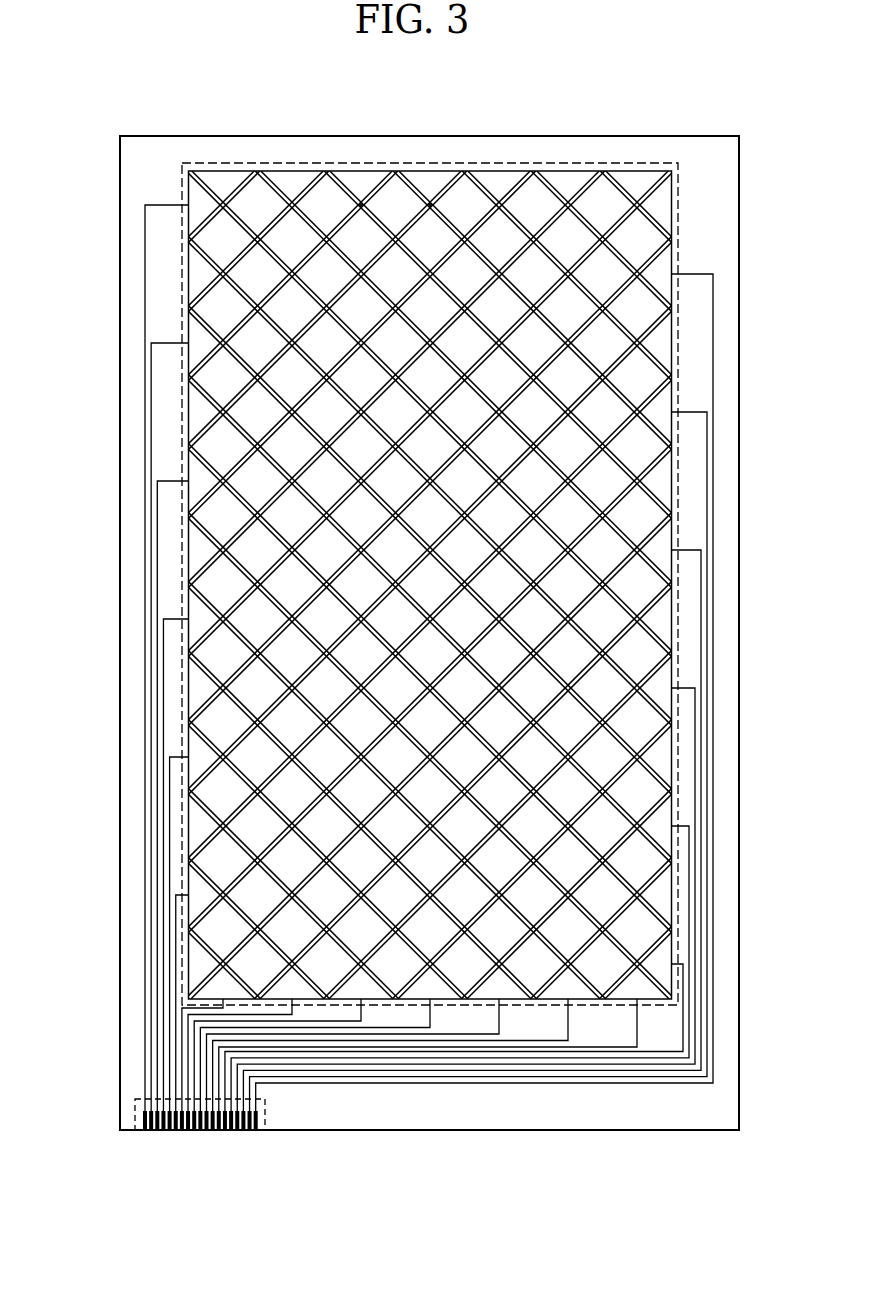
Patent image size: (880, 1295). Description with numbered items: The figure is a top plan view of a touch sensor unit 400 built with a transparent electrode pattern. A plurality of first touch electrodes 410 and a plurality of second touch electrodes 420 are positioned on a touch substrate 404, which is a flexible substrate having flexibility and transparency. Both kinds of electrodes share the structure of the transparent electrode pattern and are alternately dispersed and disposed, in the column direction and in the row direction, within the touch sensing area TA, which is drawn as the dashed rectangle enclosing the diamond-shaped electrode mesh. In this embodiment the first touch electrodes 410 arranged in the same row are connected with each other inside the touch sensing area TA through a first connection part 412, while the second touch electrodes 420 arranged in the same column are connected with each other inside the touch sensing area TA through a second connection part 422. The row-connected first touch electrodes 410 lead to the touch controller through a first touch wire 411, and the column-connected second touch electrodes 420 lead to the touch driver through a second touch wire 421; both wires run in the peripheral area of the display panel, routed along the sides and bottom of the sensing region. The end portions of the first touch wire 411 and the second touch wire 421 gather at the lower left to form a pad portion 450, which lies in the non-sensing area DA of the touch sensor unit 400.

The touch sensor unit 400 is at (544, 96).
The touch substrate 404 is at (588, 137).
The non-sensing area DA is at (138, 174).
The touch sensing area TA is at (648, 164).
The first touch electrodes 410 is at (473, 203).
The first connection part 412 is at (435, 203).
The second touch electrodes 420 is at (383, 218).
The second connection part 422 is at (353, 202).
The first touch wire 411 is at (146, 258).
The second touch wire 421 is at (498, 1017).
The pad portion 450 is at (265, 1117).